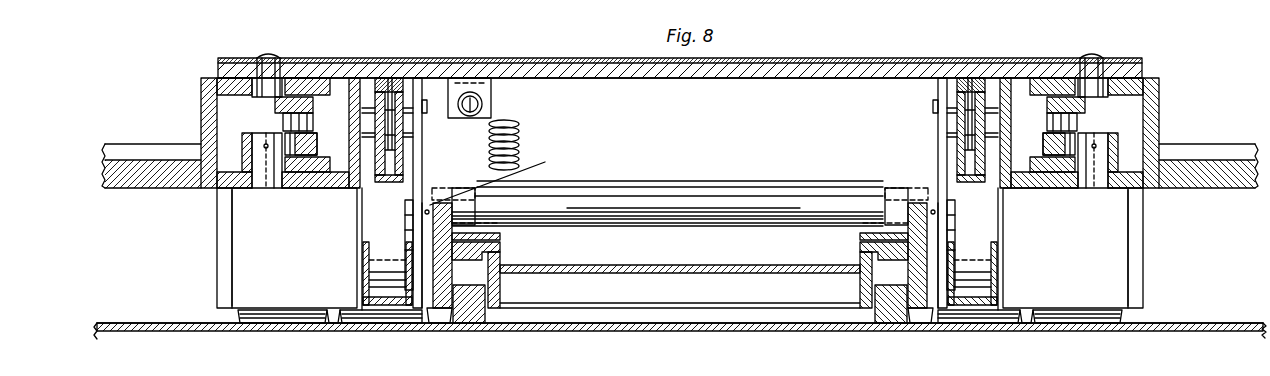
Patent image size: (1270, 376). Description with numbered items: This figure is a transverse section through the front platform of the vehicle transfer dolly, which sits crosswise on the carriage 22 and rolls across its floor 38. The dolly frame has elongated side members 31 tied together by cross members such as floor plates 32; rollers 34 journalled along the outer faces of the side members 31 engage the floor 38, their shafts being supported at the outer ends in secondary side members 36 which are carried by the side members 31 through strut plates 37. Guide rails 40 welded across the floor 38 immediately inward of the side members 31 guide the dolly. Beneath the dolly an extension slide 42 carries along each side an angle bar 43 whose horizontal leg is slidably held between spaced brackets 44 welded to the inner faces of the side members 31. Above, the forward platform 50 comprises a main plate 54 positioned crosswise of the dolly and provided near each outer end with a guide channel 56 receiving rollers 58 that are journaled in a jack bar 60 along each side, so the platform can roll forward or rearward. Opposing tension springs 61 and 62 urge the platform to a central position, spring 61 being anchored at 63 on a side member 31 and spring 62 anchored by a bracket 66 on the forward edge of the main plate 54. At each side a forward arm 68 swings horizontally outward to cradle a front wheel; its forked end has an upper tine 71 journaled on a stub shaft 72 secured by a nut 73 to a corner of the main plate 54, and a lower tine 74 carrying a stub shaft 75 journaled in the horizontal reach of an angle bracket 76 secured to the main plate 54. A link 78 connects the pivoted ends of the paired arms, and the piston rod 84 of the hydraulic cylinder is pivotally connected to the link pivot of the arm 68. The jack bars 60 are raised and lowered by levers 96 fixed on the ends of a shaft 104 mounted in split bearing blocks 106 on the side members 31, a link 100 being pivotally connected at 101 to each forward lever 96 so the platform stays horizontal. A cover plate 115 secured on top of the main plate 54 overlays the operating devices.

The carriage 22 is at (668, 326).
The side member 31 is at (440, 292).
The floor plate 32 is at (645, 192).
The roller 34 is at (355, 324).
The secondary side member 36 is at (222, 250).
The strut plate 37 is at (245, 264).
The floor 38 is at (166, 322).
The guide rail 40 is at (470, 312).
The extension slide 42 is at (654, 264).
The angle bar 43 is at (500, 288).
The bracket 44 is at (500, 236).
The forward platform 50 is at (826, 56).
The main plate 54 is at (505, 72).
The guide channel 56 is at (388, 82).
The roller 58 is at (391, 90).
The jack bar 60 is at (403, 159).
The tension spring 61 is at (522, 138).
The tension spring 62 is at (488, 103).
The anchor 63 is at (495, 176).
The bracket 66 is at (488, 88).
The forward arm 68 is at (130, 144).
The upper tine 71 is at (310, 80).
The stub shaft 72 is at (258, 88).
The nut 73 is at (276, 56).
The lower tine 74 is at (322, 160).
The stub shaft 75 is at (262, 188).
The angle bracket 76 is at (352, 105).
The link 78 is at (278, 105).
The piston rod 84 is at (318, 140).
The lever 96 is at (422, 144).
The link 100 is at (366, 292).
The pivotal connection 101 is at (390, 262).
The shaft 104 is at (712, 196).
The split bearing block 106 is at (450, 225).
The cover plate 115 is at (560, 62).